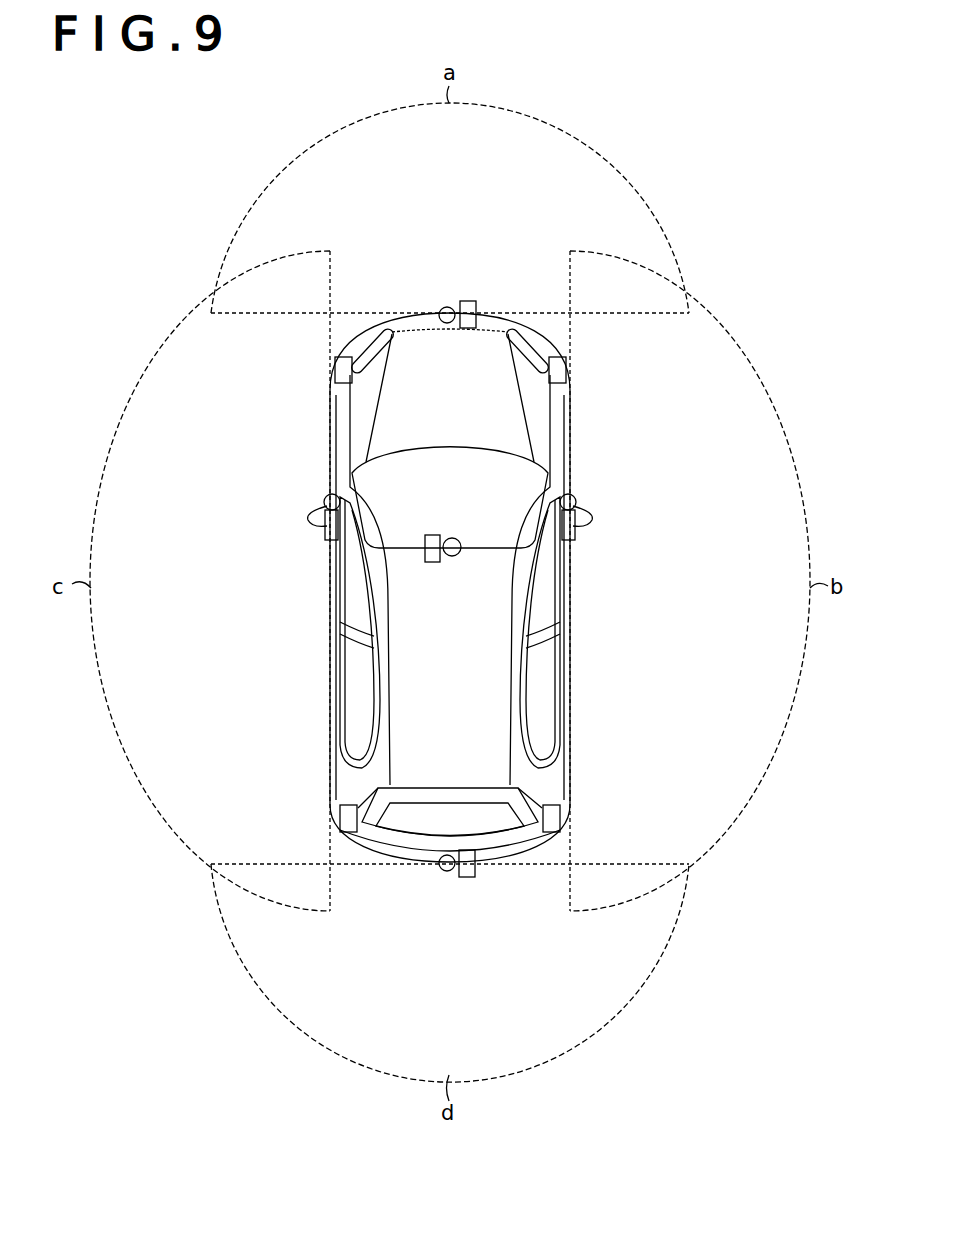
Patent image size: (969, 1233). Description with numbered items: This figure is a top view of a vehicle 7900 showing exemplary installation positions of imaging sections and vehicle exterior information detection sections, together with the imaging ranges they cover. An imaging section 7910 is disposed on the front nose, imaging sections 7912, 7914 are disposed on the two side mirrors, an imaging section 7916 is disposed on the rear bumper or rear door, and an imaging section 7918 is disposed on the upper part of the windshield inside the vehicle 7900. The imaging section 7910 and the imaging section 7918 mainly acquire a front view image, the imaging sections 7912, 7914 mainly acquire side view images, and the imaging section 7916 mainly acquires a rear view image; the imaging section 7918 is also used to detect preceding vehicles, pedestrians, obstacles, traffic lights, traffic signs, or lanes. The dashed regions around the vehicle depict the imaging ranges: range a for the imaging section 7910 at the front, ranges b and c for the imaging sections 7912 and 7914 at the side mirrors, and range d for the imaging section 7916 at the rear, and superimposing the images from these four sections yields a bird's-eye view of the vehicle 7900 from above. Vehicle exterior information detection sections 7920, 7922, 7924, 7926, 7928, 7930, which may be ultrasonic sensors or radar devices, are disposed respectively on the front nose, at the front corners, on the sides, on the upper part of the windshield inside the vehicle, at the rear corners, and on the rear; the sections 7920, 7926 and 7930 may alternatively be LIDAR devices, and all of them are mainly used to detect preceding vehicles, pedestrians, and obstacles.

The vehicle 7900 is at (330, 412).
The imaging section 7910 is at (445, 307).
The imaging section 7912 is at (324, 499).
The imaging section 7914 is at (576, 499).
The imaging section 7916 is at (445, 872).
The imaging section 7918 is at (461, 540).
The vehicle exterior information detection section 7920 is at (471, 300).
The vehicle exterior information detection section 7922 is at (334, 365).
The vehicle exterior information detection section 7924 is at (325, 535).
The vehicle exterior information detection section 7926 is at (425, 540).
The vehicle exterior information detection section 7928 is at (340, 818).
The vehicle exterior information detection section 7930 is at (470, 878).